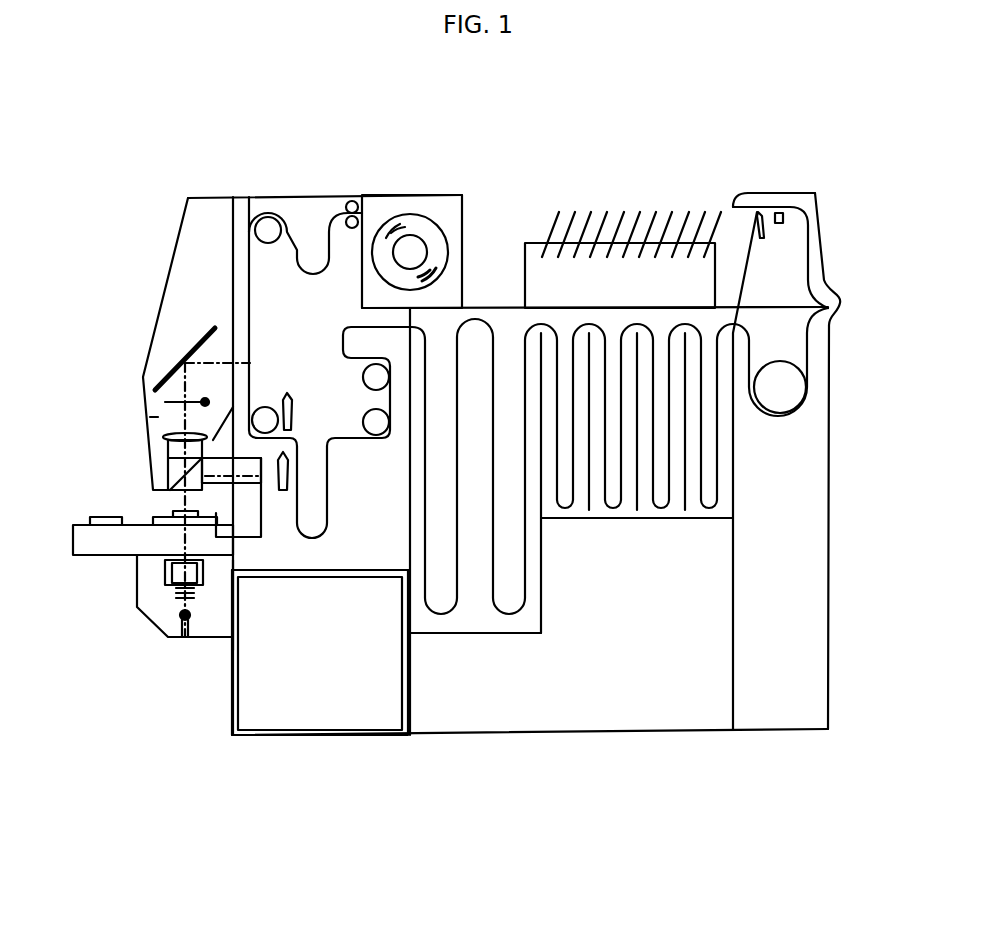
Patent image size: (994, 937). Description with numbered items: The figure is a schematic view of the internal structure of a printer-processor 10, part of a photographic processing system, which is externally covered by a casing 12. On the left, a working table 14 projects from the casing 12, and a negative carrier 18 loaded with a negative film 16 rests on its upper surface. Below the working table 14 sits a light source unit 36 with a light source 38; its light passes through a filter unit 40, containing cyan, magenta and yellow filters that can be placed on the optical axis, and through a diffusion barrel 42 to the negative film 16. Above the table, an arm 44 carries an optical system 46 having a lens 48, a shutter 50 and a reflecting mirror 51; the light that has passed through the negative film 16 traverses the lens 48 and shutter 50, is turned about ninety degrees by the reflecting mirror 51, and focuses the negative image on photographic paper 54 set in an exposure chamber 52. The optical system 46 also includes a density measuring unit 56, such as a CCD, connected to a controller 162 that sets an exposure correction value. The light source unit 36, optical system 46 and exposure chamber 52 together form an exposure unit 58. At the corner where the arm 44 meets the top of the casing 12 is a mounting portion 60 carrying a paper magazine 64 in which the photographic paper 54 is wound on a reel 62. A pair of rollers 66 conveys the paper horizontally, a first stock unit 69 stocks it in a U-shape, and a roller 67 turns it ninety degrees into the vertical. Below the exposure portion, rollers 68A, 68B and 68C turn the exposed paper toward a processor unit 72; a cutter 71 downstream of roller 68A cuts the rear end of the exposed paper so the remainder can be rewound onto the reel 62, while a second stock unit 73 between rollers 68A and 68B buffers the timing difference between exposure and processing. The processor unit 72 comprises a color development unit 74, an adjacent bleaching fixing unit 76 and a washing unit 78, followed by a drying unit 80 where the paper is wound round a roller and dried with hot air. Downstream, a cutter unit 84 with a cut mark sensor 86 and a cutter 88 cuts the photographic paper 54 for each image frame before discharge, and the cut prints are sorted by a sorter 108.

The printer-processor 10 is at (512, 152).
The casing 12 is at (306, 197).
The working table 14 is at (80, 550).
The negative film 16 is at (172, 513).
The negative carrier 18 is at (163, 524).
The light source unit 36 is at (146, 630).
The light source 38 is at (192, 618).
The filter unit 40 is at (235, 647).
The diffusion barrel 42 is at (204, 593).
The arm 44 is at (178, 281).
The optical system 46 is at (152, 417).
The lens 48 is at (163, 440).
The shutter 50 is at (153, 400).
The reflecting mirror 51 is at (187, 355).
The exposure chamber 52 is at (180, 312).
The photographic paper 54 is at (328, 467).
The density measuring unit 56 is at (241, 484).
The exposure unit 58 is at (407, 771).
The mounting portion 60 is at (360, 208).
The reel 62 is at (420, 252).
The paper magazine 64 is at (463, 207).
The pair of rollers 66 is at (353, 203).
The roller 67 is at (267, 215).
The roller 68A is at (268, 407).
The roller 68B is at (363, 422).
The roller 68C is at (365, 377).
The first stock unit 69 is at (308, 244).
The cutter 71 is at (281, 490).
The processor unit 72 is at (727, 761).
The second stock unit 73 is at (317, 530).
The color development unit 74 is at (450, 633).
The bleaching fixing unit 76 is at (520, 633).
The washing unit 78 is at (727, 522).
The drying unit 80 is at (813, 613).
The cutter unit 84 is at (782, 185).
The cut mark sensor 86 is at (785, 213).
The cutter 88 is at (756, 212).
The sorter 108 is at (542, 240).
The controller 162 is at (392, 703).